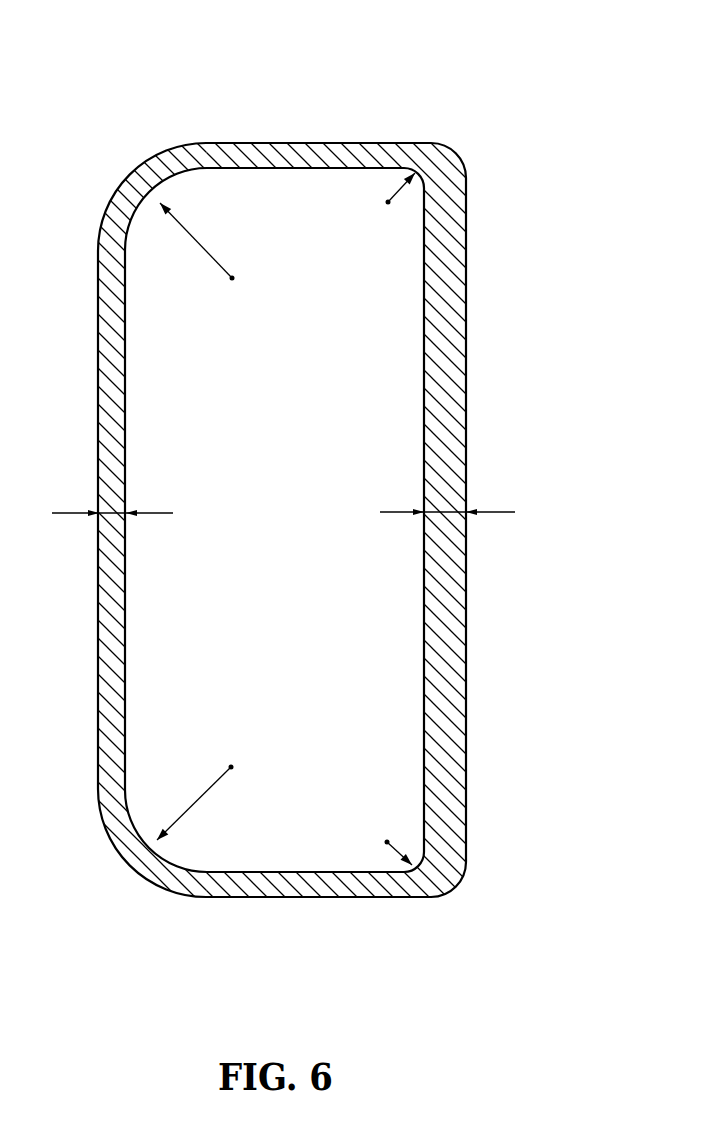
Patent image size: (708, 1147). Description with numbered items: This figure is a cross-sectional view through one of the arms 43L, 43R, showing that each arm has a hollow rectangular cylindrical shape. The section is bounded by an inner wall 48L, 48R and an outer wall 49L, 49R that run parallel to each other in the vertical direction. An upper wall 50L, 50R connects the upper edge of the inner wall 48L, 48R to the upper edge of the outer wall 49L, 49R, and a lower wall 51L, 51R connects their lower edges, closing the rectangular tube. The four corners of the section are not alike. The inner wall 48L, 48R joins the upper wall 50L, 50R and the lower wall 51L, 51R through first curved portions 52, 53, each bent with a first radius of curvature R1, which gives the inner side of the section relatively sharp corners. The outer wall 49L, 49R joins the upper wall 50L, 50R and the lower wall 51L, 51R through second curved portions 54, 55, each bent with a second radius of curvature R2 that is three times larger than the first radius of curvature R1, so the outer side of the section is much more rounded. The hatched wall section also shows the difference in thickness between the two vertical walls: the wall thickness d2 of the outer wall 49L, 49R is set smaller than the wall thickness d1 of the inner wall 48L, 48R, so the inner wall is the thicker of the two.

The arm 43L is at (345, 456).
The arm 43R is at (374, 143).
The inner wall 48L is at (538, 520).
The inner wall 48R is at (443, 552).
The outer wall 49L is at (200, 520).
The outer wall 49R is at (118, 470).
The upper wall 50L is at (305, 101).
The upper wall 50R is at (295, 152).
The lower wall 51L is at (305, 934).
The lower wall 51R is at (285, 888).
The first curved portion 52 is at (455, 168).
The first curved portion 53 is at (450, 883).
The second curved portion 54 is at (138, 182).
The second curved portion 55 is at (148, 862).
The wall thickness of the inner wall d1 is at (437, 510).
The wall thickness of the outer wall d2 is at (107, 507).
The first radius of curvature R1 is at (398, 198).
The second radius of curvature R2 is at (207, 248).